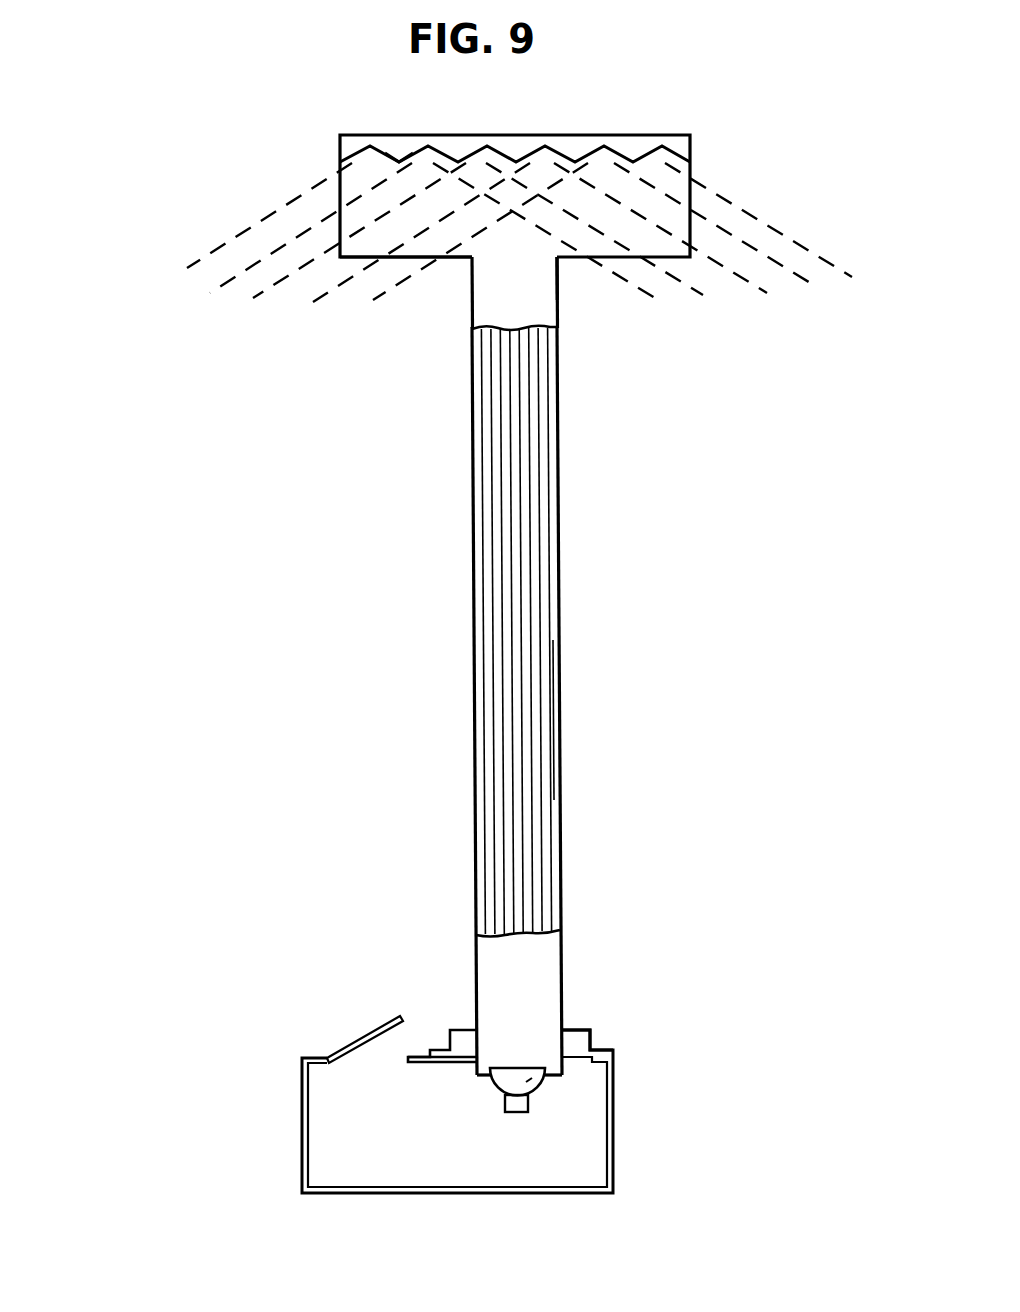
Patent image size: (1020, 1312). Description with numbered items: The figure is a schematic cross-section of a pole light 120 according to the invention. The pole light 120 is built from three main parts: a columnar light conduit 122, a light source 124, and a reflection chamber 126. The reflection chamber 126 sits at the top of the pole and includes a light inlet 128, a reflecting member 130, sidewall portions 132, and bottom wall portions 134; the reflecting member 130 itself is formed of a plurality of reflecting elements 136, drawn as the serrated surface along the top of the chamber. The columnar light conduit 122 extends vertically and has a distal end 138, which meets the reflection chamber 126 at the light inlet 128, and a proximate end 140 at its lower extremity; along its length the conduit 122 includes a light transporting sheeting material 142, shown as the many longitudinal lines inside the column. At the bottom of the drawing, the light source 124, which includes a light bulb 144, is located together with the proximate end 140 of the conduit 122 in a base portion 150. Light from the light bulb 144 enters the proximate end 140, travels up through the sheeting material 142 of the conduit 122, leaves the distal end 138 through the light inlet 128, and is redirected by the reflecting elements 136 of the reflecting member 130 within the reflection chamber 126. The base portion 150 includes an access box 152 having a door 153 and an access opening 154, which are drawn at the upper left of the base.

The pole light 120 is at (537, 502).
The columnar light conduit 122 is at (550, 720).
The light source 124 is at (635, 1078).
The reflection chamber 126 is at (502, 242).
The light inlet 128 is at (488, 278).
The reflecting member 130 is at (563, 150).
The sidewall portions 132 is at (338, 168).
The bottom wall portions 134 is at (362, 259).
The reflecting elements 136 is at (395, 160).
The distal end 138 is at (580, 290).
The proximate end 140 is at (580, 981).
The light transporting sheeting material 142 is at (537, 615).
The light bulb 144 is at (531, 1093).
The base portion 150 is at (491, 1071).
The access box 152 is at (302, 1150).
The door 153 is at (362, 1031).
The access opening 154 is at (388, 1050).